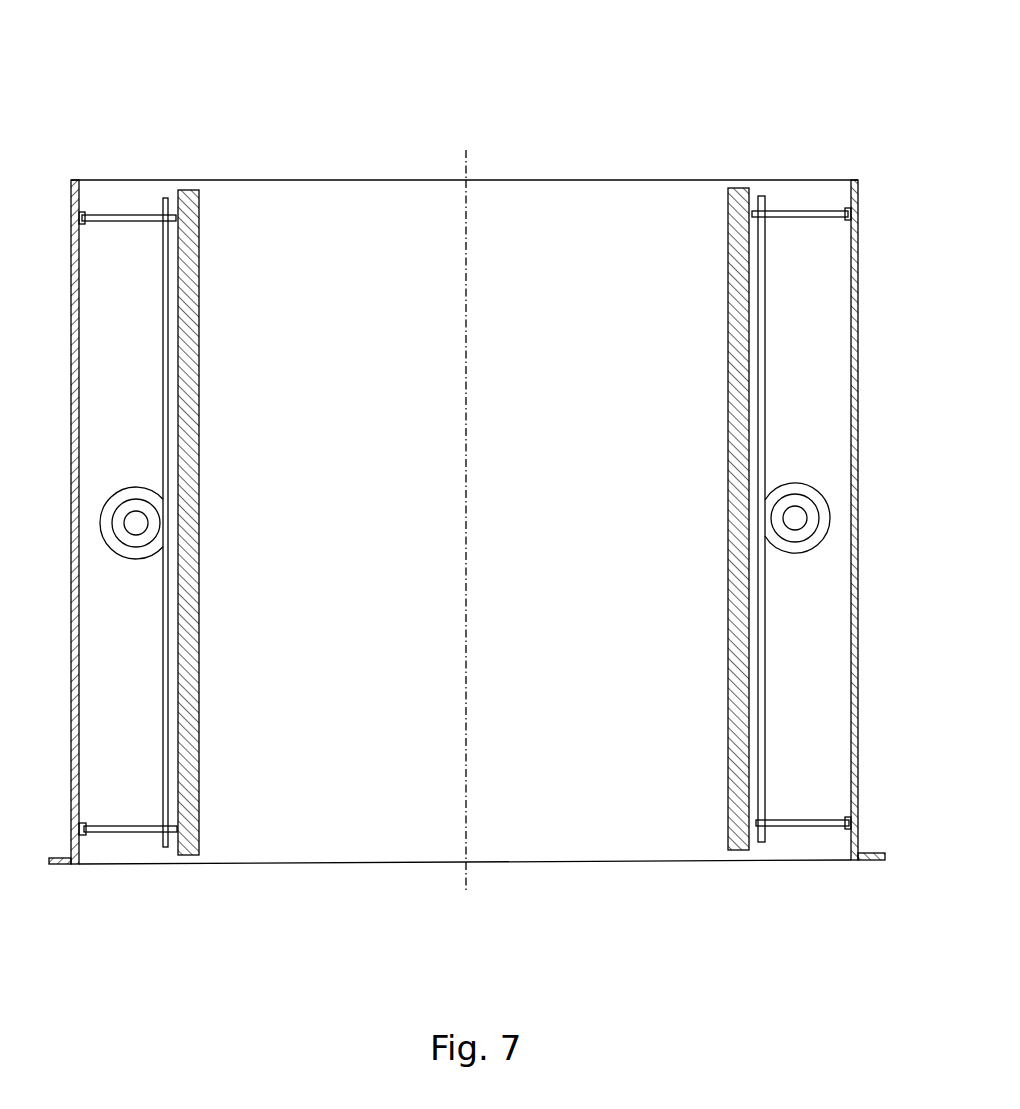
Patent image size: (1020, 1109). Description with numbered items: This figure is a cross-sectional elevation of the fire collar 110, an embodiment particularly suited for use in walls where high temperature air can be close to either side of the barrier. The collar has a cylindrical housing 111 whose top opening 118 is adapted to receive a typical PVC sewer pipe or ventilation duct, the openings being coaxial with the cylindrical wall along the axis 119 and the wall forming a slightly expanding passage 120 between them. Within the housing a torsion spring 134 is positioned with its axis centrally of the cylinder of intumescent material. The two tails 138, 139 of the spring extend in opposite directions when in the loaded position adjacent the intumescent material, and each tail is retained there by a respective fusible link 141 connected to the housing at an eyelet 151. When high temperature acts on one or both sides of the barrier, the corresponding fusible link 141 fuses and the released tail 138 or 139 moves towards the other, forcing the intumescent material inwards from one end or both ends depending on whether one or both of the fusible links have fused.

The fire collar 110 is at (547, 107).
The cylindrical housing 111 is at (628, 218).
The top opening 118 is at (411, 178).
The axis 119 is at (466, 160).
The passage 120 is at (468, 265).
The torsion spring 134 is at (136, 523).
The tail of the spring 138 is at (170, 332).
The tail of the spring 139 is at (170, 683).
The fusible link 141 is at (128, 216).
The eyelet 151 is at (85, 215).